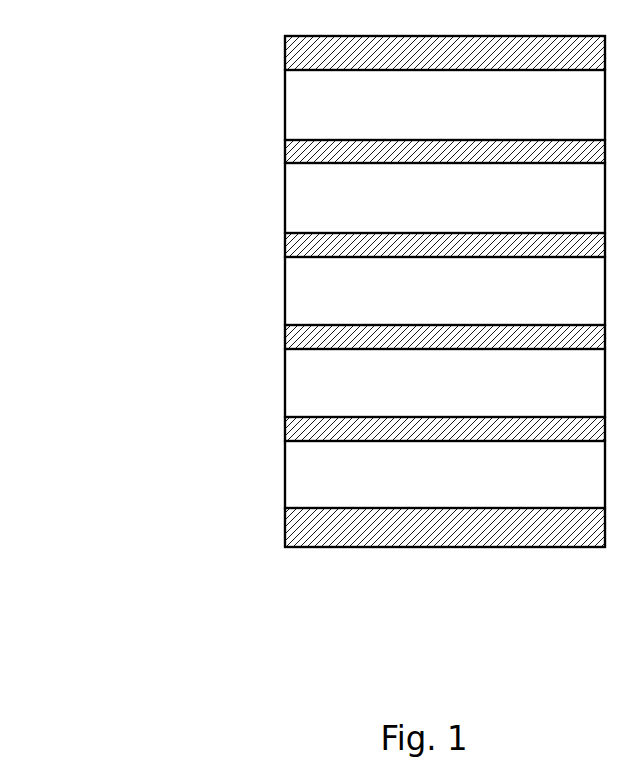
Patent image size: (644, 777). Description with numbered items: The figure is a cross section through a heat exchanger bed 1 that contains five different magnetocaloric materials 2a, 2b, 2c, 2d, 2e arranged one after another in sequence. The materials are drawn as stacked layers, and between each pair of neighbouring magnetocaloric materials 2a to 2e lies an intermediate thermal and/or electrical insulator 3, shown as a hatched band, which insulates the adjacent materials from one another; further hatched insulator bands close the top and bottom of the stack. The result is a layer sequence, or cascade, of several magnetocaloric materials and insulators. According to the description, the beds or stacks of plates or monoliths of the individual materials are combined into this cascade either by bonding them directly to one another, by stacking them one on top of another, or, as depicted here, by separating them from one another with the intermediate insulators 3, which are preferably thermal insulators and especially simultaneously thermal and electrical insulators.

The heat exchanger bed 1 is at (332, 291).
The magnetocaloric material 2a is at (445, 105).
The magnetocaloric material 2b is at (445, 198).
The magnetocaloric material 2c is at (445, 291).
The magnetocaloric material 2d is at (445, 383).
The magnetocaloric material 2e is at (445, 474).
The intermediate thermal and/or electrical insulator 3 is at (304, 431).